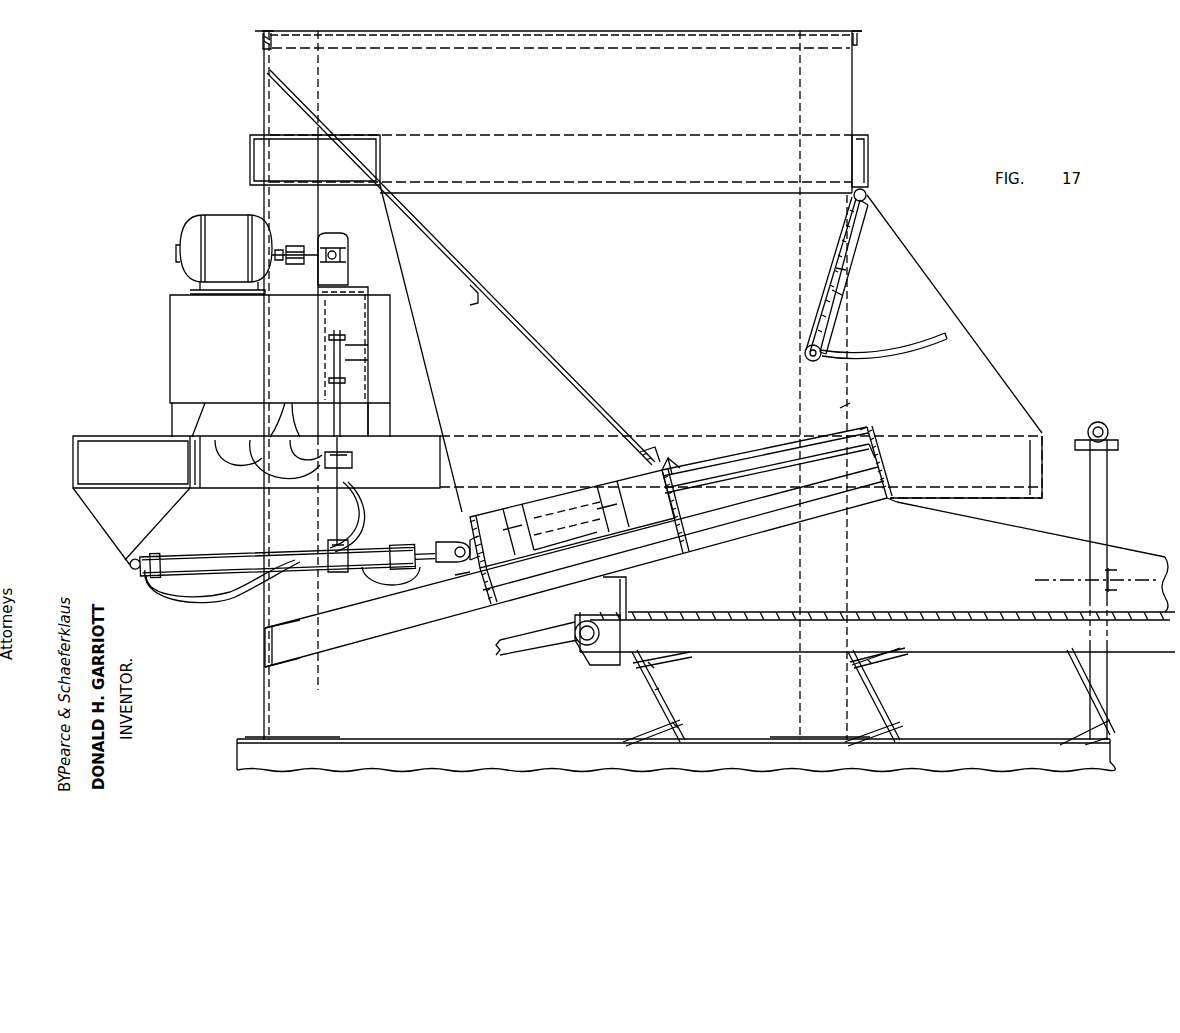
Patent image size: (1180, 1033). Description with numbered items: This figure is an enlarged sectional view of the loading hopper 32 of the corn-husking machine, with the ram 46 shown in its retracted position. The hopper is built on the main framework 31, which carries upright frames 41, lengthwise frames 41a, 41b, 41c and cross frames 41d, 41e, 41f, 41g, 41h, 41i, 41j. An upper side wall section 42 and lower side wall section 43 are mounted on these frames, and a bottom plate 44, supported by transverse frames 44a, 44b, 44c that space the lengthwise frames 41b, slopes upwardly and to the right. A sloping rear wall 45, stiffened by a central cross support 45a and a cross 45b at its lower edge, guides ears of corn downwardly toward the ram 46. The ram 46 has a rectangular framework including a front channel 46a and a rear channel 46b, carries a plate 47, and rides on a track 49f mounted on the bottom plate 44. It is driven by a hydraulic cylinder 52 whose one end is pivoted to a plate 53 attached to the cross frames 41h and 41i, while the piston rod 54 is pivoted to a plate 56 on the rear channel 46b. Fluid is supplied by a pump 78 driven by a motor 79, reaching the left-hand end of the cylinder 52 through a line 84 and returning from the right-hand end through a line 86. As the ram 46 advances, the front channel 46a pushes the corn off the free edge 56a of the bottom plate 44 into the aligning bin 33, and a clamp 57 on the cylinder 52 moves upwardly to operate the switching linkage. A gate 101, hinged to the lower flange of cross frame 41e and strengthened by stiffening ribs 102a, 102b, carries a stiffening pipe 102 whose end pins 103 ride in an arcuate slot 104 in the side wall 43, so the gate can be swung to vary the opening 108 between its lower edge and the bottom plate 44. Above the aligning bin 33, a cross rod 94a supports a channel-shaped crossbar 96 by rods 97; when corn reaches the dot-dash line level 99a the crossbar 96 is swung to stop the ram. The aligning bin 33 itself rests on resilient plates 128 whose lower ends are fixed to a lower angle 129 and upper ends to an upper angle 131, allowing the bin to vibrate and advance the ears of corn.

The main framework 31 is at (240, 752).
The loading hopper 32 is at (380, 58).
The aligning bin 33 is at (1140, 550).
The upright frames 41 is at (270, 698).
The lengthwise frame 41a is at (320, 190).
The lengthwise frame 41b is at (345, 630).
The lengthwise frame 41c is at (230, 478).
The cross frame 41d is at (250, 162).
The cross frame 41e is at (868, 150).
The cross frame 41f is at (356, 464).
The cross frame 41g is at (262, 38).
The cross frame 41h is at (82, 461).
The cross frame 41i is at (192, 462).
The cross frame 41j is at (860, 36).
The upper side wall section 42 is at (830, 78).
The lower side wall section 43 is at (438, 372).
The bottom plate 44 is at (765, 492).
The transverse frame 44a is at (480, 592).
The transverse frame 44b is at (675, 555).
The transverse frame 44c is at (875, 498).
The sloping rear wall 45 is at (440, 236).
The central cross support 45a is at (478, 300).
The cross 45b is at (636, 456).
The ram 46 is at (490, 508).
The front channel 46a is at (690, 455).
The rear channel 46b is at (470, 538).
The plate 47 is at (540, 490).
The track 49f is at (869, 428).
The cylinder 52 is at (225, 580).
The plate 53 is at (148, 522).
The piston rod 54 is at (445, 545).
The plate 56 is at (455, 578).
The free edge 56a is at (880, 458).
The clamp 57 is at (336, 568).
The pump 78 is at (342, 272).
The motor 79 is at (235, 222).
The line 84 is at (190, 598).
The line 86 is at (348, 528).
The cross rod 94a is at (1110, 428).
The crossbar 96 is at (1112, 592).
The rods 97 is at (1105, 488).
The dot-dash line level 99a is at (1058, 580).
The gate 101 is at (805, 292).
The stiffening pipe 102 is at (817, 366).
The stiffening rib 102a is at (838, 245).
The stiffening rib 102b is at (845, 290).
The pin 103 is at (803, 358).
The arcuate slot 104 is at (870, 352).
The opening 108 is at (848, 405).
The resilient plate 128 is at (652, 693).
The lower angle 129 is at (860, 722).
The upper angle 131 is at (885, 660).